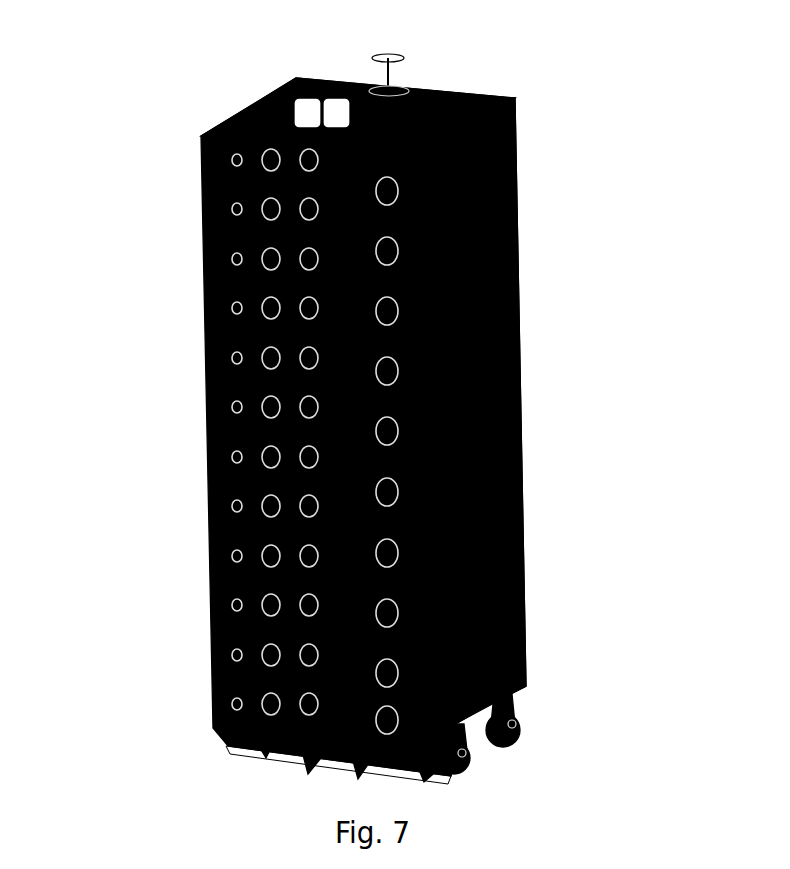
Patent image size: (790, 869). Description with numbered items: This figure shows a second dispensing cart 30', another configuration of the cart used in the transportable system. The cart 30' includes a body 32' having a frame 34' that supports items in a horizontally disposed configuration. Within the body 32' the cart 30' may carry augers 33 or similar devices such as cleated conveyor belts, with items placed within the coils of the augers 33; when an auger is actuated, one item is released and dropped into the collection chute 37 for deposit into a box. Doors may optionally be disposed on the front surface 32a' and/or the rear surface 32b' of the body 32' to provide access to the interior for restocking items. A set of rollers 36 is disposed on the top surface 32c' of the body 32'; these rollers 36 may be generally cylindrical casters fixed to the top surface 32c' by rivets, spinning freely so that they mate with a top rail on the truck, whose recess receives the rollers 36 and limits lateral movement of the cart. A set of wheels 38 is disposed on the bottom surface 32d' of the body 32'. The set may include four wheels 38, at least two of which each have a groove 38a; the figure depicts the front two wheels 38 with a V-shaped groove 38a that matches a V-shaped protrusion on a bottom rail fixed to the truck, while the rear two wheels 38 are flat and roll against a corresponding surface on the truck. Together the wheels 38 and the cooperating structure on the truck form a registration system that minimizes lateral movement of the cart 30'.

The cart 30' is at (357, 430).
The body 32' is at (365, 394).
The front surface 32a' is at (489, 186).
The rear surface 32b' is at (279, 75).
The top surface 32c' is at (383, 99).
The bottom surface 32d' is at (529, 705).
The augers 33 is at (205, 447).
The frame 34' is at (528, 411).
The rollers 36 is at (423, 54).
The collection chute 37 is at (290, 784).
The wheels 38 is at (583, 723).
The groove 38a is at (514, 786).